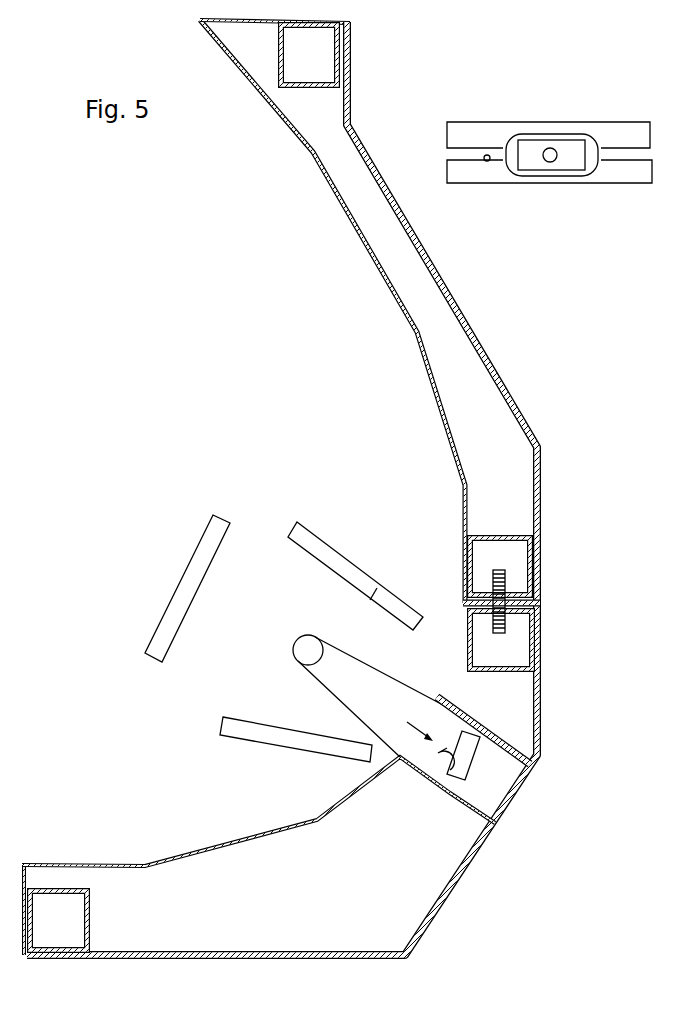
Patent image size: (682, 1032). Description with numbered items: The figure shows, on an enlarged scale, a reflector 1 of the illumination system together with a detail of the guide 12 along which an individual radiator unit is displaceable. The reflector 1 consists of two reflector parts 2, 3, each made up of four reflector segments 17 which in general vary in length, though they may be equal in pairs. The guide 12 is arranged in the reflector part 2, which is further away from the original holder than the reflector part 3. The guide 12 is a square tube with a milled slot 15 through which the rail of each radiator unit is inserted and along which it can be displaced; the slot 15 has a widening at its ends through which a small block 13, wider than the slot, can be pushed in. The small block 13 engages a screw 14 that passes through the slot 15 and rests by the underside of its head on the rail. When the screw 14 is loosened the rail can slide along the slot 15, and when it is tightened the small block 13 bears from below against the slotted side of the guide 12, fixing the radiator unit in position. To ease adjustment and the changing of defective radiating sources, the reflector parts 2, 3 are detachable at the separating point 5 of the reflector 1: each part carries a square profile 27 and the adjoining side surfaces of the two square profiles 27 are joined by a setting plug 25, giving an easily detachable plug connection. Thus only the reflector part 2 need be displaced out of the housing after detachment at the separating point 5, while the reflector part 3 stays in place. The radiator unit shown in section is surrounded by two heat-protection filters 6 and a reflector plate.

The reflector 1 is at (279, 487).
The reflector part 2 is at (204, 838).
The reflector part 3 is at (279, 487).
The separating point 5 is at (528, 604).
The heat-protection filter 6 is at (170, 612).
The guide 12 is at (490, 796).
The small block 13 is at (474, 757).
The screw 14 is at (487, 161).
The milled slot 15 is at (446, 761).
The reflector segment 17 is at (282, 120).
The setting plug 25 is at (506, 585).
The square profile 27 is at (533, 549).